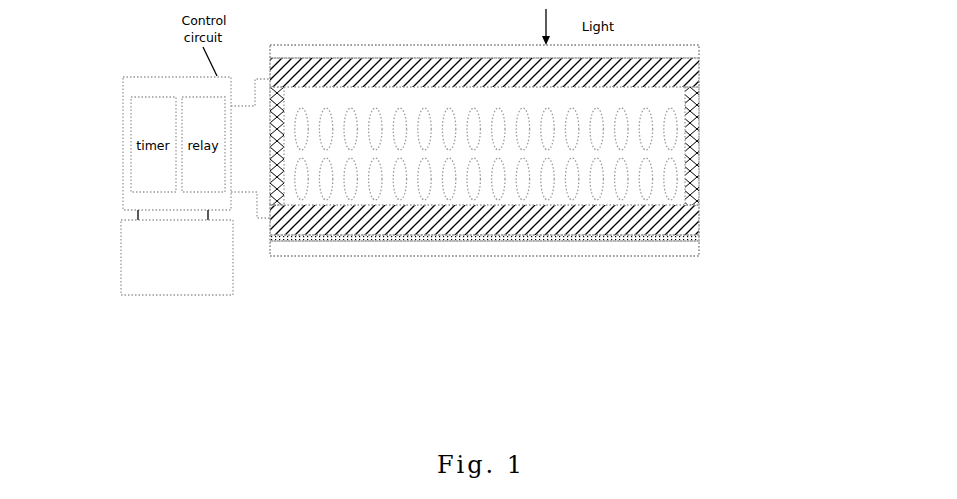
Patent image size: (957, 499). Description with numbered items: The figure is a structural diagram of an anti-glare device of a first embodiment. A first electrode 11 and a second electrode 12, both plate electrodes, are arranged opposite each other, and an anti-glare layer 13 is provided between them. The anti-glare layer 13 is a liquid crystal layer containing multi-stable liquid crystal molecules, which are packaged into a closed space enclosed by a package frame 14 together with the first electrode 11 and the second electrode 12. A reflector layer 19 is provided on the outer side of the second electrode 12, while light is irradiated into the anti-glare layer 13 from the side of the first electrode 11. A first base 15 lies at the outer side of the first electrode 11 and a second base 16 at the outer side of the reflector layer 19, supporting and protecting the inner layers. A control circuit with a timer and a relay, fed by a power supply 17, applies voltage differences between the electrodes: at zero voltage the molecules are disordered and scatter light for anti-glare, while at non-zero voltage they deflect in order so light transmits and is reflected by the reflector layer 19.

The first electrode 11 is at (683, 80).
The second electrode 12 is at (698, 212).
The anti-glare layer 13 is at (672, 108).
The package frame 14 is at (700, 158).
The first base 15 is at (683, 52).
The second base 16 is at (680, 257).
The power supply 17 is at (125, 230).
The reflector layer 19 is at (683, 238).